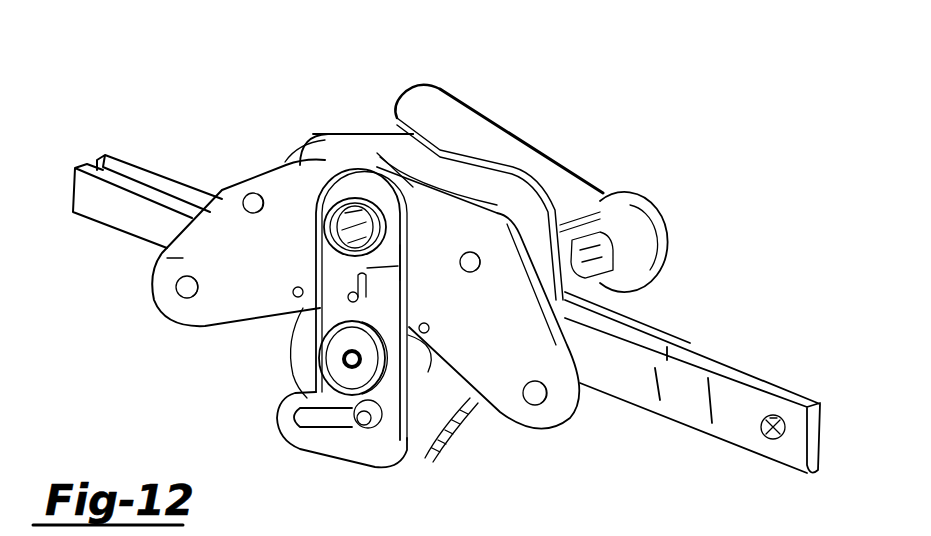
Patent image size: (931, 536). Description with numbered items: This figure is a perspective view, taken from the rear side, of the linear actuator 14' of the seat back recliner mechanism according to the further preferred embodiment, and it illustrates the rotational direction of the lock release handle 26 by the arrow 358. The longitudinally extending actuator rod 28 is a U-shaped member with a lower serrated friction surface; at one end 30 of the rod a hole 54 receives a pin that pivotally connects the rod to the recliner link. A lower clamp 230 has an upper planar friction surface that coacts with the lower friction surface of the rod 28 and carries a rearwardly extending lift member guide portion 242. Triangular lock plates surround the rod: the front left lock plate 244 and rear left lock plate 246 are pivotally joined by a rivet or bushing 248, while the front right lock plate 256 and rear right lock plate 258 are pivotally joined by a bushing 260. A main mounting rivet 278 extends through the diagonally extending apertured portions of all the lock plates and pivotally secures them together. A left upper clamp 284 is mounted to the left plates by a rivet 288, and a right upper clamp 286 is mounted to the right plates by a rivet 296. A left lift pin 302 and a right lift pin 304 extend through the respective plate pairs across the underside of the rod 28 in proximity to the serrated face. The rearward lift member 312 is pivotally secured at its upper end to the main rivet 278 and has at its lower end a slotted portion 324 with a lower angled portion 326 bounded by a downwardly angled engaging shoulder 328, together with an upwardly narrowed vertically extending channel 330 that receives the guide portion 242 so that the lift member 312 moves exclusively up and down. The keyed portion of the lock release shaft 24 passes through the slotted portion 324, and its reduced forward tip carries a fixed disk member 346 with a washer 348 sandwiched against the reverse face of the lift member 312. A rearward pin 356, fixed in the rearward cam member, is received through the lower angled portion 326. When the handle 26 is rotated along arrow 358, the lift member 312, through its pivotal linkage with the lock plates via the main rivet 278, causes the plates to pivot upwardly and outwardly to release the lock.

The linear actuator 14' is at (166, 50).
The lock release shaft 24 is at (628, 296).
The lock release handle 26 is at (568, 172).
The actuator rod 28 is at (142, 170).
The end of the rod 30 is at (818, 428).
The hole 54 is at (766, 440).
The lower clamp 230 is at (377, 470).
The lift member guide portion 242 is at (348, 293).
The front left lock plate 244 is at (497, 193).
The rear left lock plate 246 is at (488, 398).
The rivet or bushing 248 is at (580, 397).
The front right lock plate 256 is at (367, 133).
The rear right lock plate 258 is at (183, 258).
The bushing 260 is at (178, 292).
The main mounting rivet 278 is at (313, 160).
The left upper clamp 284 is at (327, 157).
The right upper clamp 286 is at (578, 173).
The rivet 288 is at (463, 270).
The rivet 296 is at (245, 196).
The left lift pin 302 is at (430, 330).
The right lift pin 304 is at (295, 287).
The rearward lift member 312 is at (362, 162).
The slotted portion 324 is at (425, 458).
The lower angled portion 326 is at (328, 452).
The downwardly angled engaging shoulder 328 is at (287, 392).
The vertically extending channel 330 is at (413, 262).
The disk member 346 is at (290, 380).
The washer 348 is at (330, 355).
The rearward pin 356 is at (325, 418).
The arrow 358 is at (598, 38).